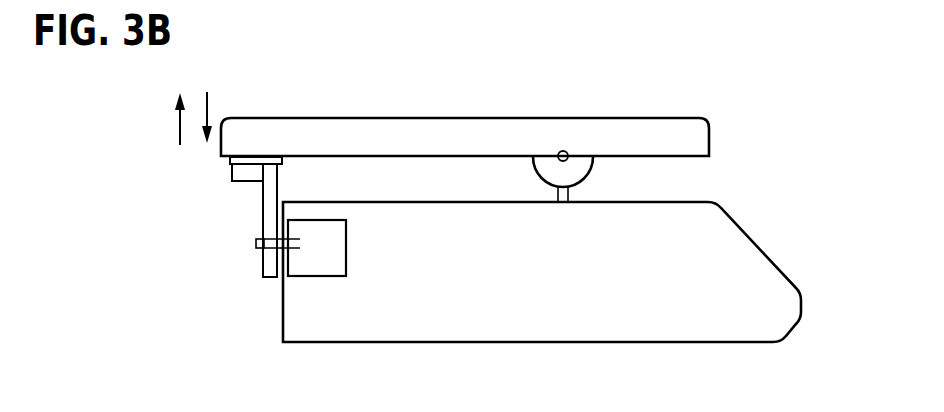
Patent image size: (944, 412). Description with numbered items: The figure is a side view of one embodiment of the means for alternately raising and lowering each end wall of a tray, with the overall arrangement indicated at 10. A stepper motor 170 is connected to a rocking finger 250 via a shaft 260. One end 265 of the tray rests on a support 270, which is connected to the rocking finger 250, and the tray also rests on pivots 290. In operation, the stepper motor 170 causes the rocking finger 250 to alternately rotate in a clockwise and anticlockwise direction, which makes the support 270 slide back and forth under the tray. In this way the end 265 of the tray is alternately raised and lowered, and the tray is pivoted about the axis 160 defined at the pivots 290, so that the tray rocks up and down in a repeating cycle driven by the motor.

The computer apparatus 10 is at (613, 84).
The end of the tray 265 is at (267, 118).
The support 270 is at (230, 159).
The rocking finger 250 is at (263, 210).
The shaft 260 is at (256, 245).
The stepper motor 170 is at (347, 258).
The axis 160 is at (569, 158).
The pivots 290 is at (550, 186).